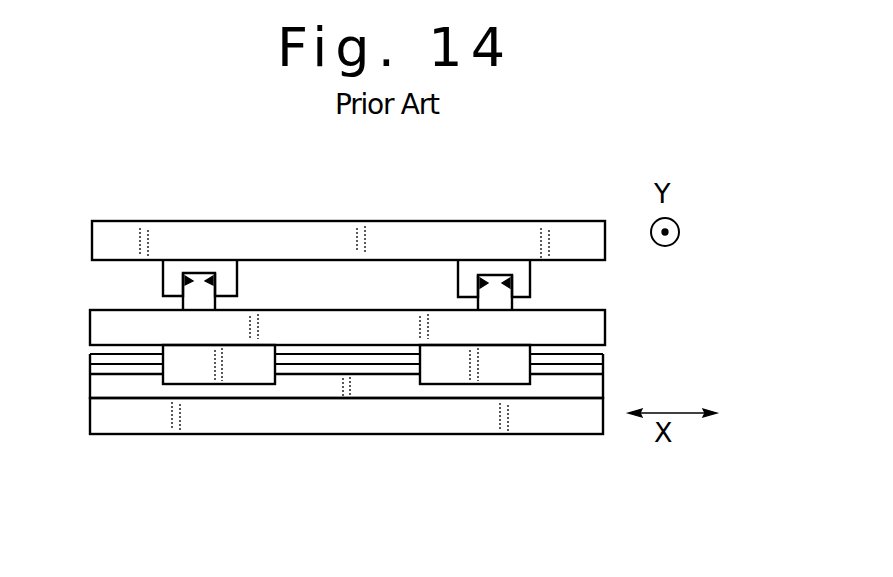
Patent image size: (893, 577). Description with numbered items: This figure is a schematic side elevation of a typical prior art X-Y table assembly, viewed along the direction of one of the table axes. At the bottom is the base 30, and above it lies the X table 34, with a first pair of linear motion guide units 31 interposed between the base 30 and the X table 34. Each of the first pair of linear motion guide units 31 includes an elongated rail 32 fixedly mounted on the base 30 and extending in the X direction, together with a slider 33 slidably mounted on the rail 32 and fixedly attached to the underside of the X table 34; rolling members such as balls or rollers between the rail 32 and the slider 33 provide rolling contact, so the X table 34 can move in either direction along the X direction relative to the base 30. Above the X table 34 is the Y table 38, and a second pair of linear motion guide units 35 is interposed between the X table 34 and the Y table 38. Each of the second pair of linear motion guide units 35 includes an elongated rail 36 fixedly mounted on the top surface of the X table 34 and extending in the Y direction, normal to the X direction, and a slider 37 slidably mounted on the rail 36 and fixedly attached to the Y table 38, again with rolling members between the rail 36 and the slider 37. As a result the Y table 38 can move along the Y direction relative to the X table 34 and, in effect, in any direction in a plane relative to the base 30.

The base 30 is at (346, 415).
The first pair of linear motion guide units 31 is at (90, 376).
The elongated rail 32 is at (148, 380).
The slider 33 is at (237, 370).
The X table 34 is at (92, 325).
The second pair of linear motion guide units 35 is at (163, 284).
The elongated rail 36 is at (198, 278).
The slider 37 is at (230, 265).
The Y table 38 is at (333, 232).